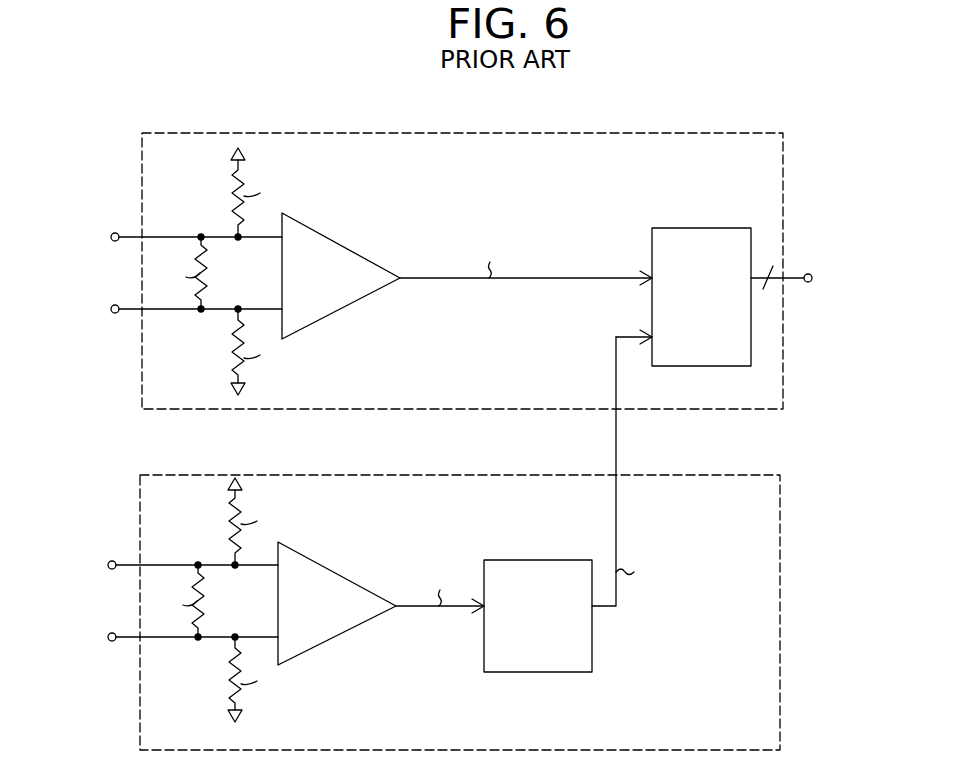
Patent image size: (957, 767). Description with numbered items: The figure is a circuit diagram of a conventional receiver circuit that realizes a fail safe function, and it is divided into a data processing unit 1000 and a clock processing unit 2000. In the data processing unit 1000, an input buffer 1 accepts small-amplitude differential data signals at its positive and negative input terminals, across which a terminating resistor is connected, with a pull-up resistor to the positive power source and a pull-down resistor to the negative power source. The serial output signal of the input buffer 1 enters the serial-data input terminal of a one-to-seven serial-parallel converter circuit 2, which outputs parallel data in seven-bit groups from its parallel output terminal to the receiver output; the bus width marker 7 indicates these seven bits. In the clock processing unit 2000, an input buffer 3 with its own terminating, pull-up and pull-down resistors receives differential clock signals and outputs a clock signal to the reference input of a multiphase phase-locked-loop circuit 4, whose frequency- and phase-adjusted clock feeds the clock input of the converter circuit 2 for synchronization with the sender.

The input buffer 1 is at (342, 247).
The 1:7 serial-parallel converter circuit 2 is at (652, 250).
The input buffer 3 is at (342, 578).
The multiphase PLL circuit 4 is at (530, 560).
The 7-bit bus width indicator 7 is at (777, 271).
The data processing unit 1000 is at (165, 131).
The clock processing unit 2000 is at (168, 474).